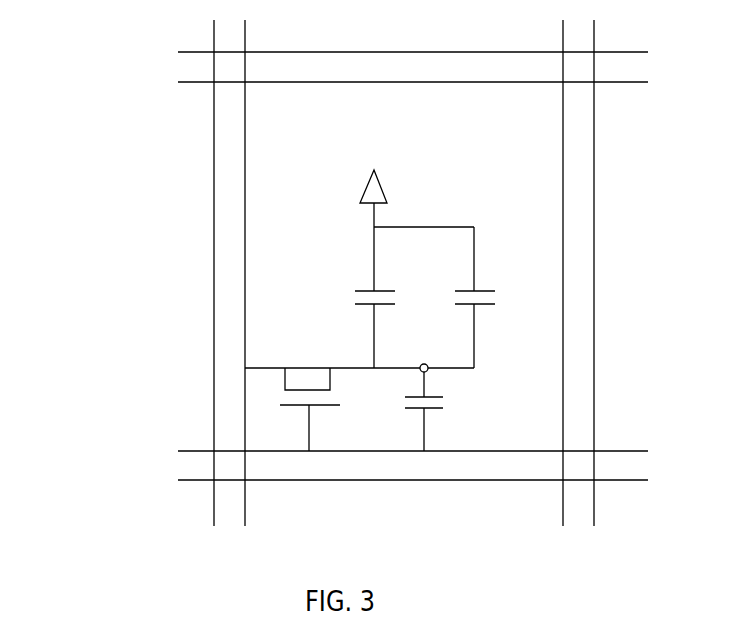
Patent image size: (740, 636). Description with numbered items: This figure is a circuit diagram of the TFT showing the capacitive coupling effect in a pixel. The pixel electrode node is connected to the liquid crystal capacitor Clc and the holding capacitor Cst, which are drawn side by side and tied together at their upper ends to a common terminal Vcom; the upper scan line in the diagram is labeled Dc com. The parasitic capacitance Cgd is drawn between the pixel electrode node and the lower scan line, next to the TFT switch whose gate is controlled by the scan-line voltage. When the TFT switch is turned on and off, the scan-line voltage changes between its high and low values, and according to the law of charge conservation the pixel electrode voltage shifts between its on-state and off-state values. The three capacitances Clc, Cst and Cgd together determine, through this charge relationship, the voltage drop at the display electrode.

The common voltage line (DC common) Dc com is at (195, 69).
The common voltage terminal Vcom is at (390, 183).
The liquid crystal capacitor Clc is at (370, 288).
The holding capacitor Cst is at (478, 288).
The parasitic capacitance Cgd is at (427, 410).